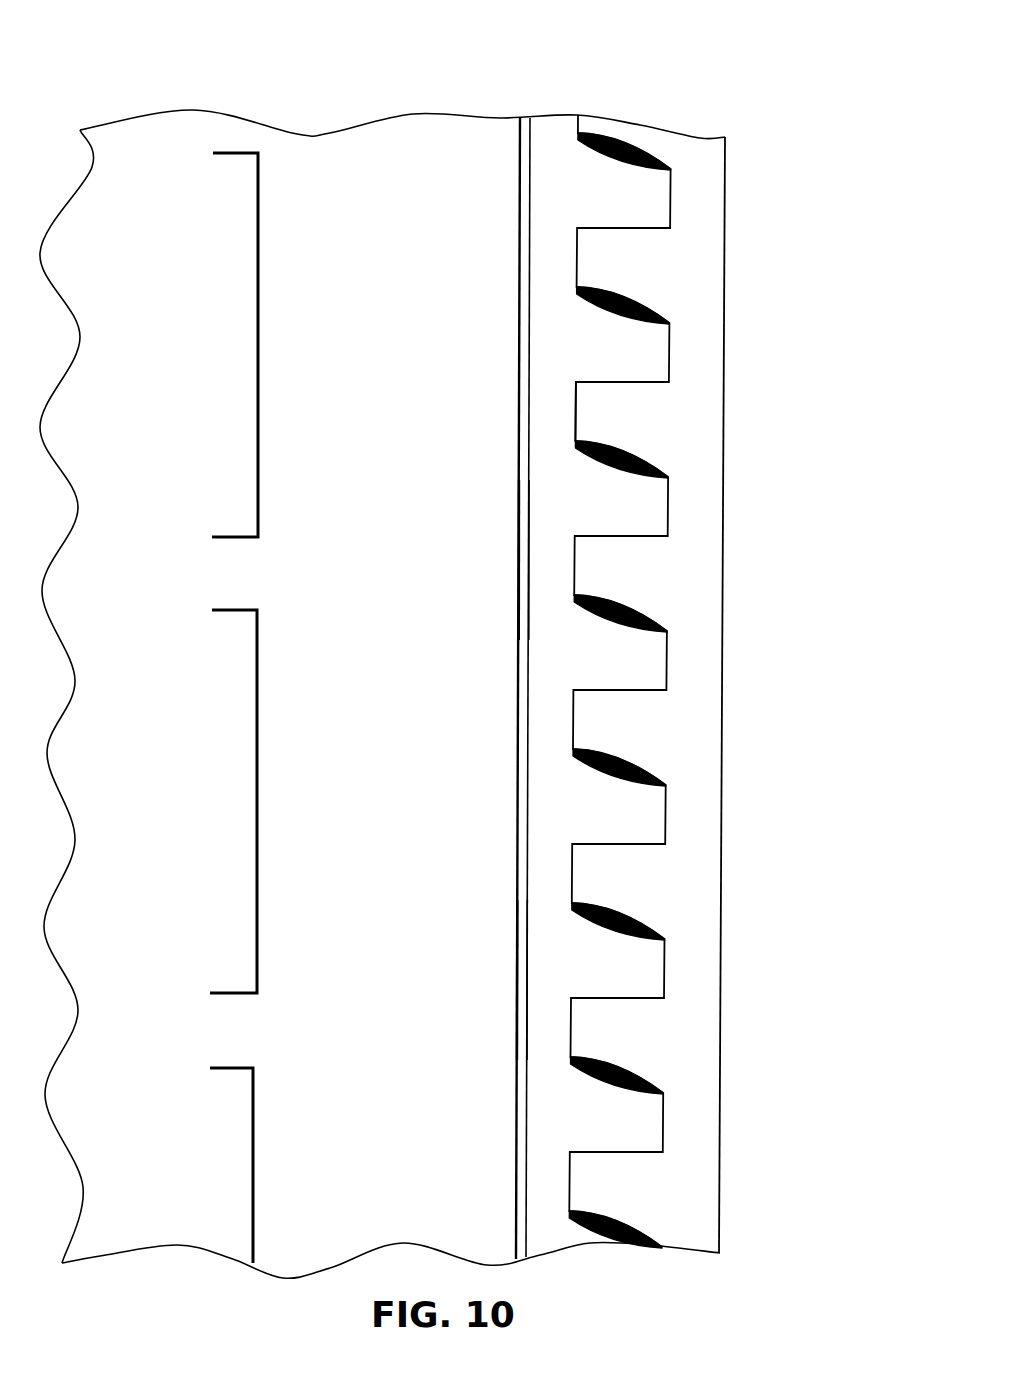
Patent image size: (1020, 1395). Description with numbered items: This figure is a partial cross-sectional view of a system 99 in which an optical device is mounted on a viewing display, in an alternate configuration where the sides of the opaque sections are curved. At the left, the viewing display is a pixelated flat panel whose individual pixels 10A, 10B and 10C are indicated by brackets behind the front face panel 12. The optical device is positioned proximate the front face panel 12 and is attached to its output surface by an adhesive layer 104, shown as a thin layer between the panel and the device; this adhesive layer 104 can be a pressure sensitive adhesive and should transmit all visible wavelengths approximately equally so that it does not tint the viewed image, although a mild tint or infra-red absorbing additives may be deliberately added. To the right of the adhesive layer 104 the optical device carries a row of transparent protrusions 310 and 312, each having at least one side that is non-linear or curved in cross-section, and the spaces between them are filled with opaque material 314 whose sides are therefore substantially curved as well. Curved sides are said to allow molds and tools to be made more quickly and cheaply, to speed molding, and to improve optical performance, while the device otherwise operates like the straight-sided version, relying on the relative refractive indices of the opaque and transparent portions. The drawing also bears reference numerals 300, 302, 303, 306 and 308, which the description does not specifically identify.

The system 99 is at (364, 108).
The front face panel 12 is at (331, 168).
The pixel 10A is at (218, 305).
The pixel 10B is at (217, 885).
The pixel 10C is at (220, 1080).
The adhesive layer 104 is at (524, 133).
The connector structure 300 is at (655, 679).
The stepped wall 302 is at (715, 487).
The conductive layer 303 is at (535, 560).
The outer wall 306 is at (734, 934).
The conductive layer portion 308 is at (520, 978).
The transparent protrusion 310 is at (658, 288).
The transparent protrusion 312 is at (593, 356).
The opaque material 314 is at (629, 132).